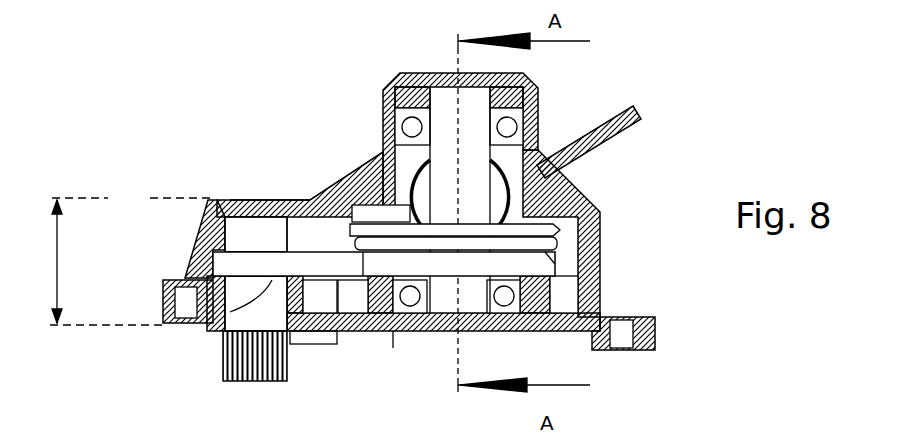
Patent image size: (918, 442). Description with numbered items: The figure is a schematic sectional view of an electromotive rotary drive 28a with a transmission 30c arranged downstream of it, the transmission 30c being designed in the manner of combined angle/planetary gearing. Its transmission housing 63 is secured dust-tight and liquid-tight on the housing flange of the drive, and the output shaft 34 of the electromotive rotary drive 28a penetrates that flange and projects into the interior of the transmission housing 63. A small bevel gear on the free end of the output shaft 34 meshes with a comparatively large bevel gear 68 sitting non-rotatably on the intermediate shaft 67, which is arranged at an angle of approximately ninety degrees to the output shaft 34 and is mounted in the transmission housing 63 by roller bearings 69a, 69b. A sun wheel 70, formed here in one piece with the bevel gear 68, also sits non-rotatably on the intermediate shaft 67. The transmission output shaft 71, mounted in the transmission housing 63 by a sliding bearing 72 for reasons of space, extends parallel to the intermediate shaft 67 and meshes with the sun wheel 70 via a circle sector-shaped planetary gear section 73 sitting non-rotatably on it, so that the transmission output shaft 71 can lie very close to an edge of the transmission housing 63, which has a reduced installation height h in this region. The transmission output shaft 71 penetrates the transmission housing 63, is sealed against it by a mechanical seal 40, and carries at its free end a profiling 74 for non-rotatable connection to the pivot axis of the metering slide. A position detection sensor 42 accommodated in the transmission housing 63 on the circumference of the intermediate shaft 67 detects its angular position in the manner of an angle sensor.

The position detection sensor 42 is at (413, 80).
The roller bearing 69a is at (382, 90).
The roller bearing 69b is at (390, 334).
The electromotive rotary drive 28a is at (405, 164).
The transmission 30c is at (302, 194).
The transmission output shaft 71 is at (247, 240).
The transmission housing 63 is at (198, 232).
The sliding bearing 72 is at (187, 260).
The planetary gear section 73 is at (190, 326).
The profiling 74 is at (222, 364).
The mechanical seal 40 is at (304, 334).
The output shaft 34 is at (470, 197).
The intermediate shaft 67 is at (565, 185).
The bevel gear 68 is at (585, 205).
The sun wheel 70 is at (592, 278).
The installation height h is at (55, 238).